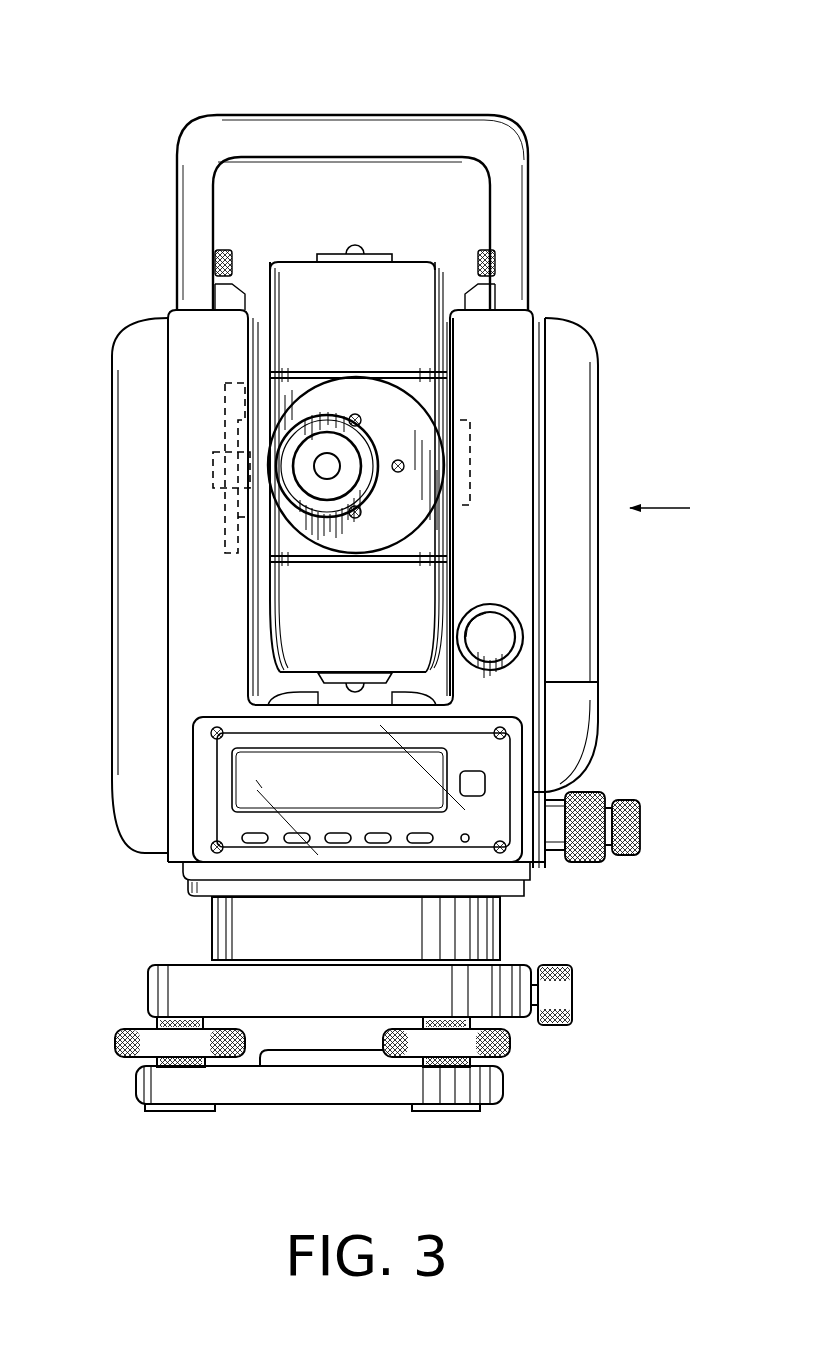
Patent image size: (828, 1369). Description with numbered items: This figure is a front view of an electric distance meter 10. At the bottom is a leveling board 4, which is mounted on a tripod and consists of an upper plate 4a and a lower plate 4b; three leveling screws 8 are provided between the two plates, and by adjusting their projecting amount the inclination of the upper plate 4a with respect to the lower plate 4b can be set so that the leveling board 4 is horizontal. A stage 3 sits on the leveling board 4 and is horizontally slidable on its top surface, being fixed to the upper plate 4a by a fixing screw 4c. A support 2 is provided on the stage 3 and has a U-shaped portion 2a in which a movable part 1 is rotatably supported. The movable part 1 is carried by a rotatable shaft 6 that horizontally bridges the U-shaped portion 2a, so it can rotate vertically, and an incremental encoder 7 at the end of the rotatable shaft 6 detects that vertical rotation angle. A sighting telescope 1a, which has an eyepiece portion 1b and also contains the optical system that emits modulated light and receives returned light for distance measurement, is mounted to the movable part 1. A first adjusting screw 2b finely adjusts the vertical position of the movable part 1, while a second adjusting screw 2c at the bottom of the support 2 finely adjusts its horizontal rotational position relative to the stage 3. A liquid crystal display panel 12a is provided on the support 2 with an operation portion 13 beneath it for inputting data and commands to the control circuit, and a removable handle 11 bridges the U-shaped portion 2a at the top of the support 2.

The electric distance meter 10 is at (482, 80).
The handle 11 is at (520, 197).
The movable part 1 is at (298, 282).
The sighting telescope 1a is at (397, 432).
The eyepiece portion 1b is at (306, 500).
The support 2 is at (517, 357).
The U-shaped portion 2a is at (440, 337).
The first adjusting screw 2b is at (498, 622).
The second adjusting screw 2c is at (622, 818).
The stage 3 is at (486, 930).
The leveling board 4 is at (92, 1040).
The upper plate 4a is at (172, 997).
The lower plate 4b is at (140, 1088).
The fixing screw 4c is at (558, 995).
The rotatable shaft 6 is at (244, 418).
The encoder 7 is at (225, 430).
The leveling screws 8 is at (512, 1040).
The liquid crystal display panel 12a is at (283, 765).
The operation portion 13 is at (261, 866).